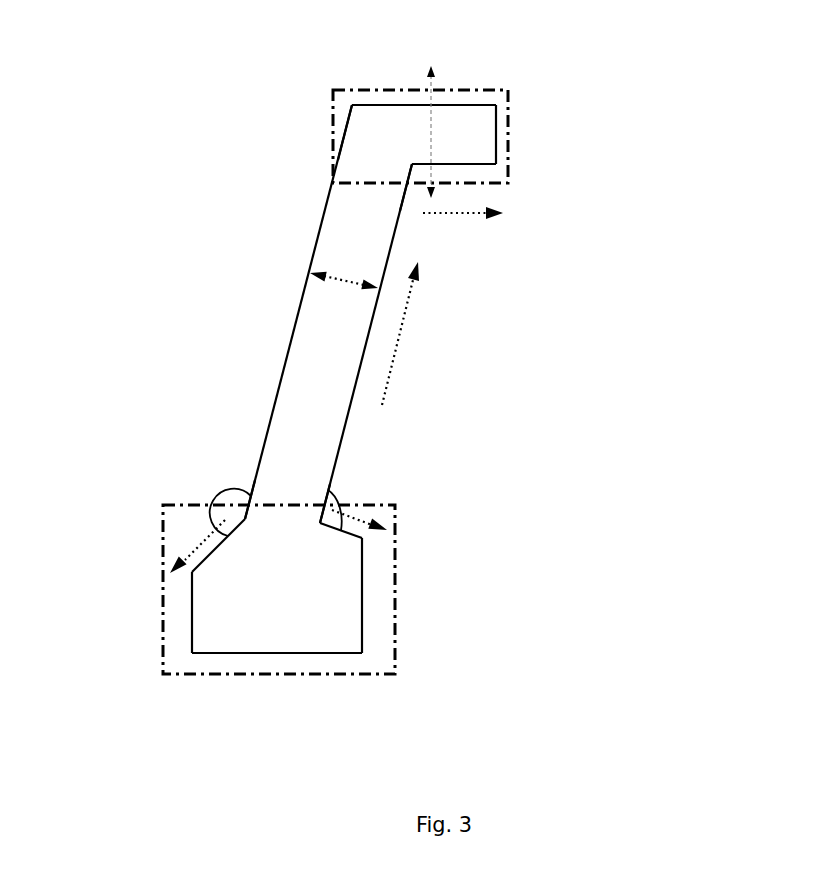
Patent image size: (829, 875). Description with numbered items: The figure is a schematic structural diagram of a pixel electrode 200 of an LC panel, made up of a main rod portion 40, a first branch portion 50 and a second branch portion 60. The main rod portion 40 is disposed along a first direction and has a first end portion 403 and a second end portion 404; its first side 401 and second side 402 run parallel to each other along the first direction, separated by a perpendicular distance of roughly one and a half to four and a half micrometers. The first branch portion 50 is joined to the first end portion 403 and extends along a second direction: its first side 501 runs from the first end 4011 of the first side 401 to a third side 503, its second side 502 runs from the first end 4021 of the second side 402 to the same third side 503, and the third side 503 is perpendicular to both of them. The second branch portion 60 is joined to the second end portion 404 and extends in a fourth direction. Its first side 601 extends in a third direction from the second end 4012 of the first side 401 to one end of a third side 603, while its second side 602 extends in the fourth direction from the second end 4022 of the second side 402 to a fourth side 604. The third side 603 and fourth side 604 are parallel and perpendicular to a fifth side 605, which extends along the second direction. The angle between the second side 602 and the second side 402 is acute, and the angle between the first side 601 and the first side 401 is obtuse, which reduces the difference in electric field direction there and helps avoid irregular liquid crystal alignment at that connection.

The pixel electrode 200 is at (738, 60).
The first branch portion 50 is at (510, 145).
The first side of first branch portion 501 is at (450, 105).
The second side of first branch portion 502 is at (473, 163).
The third side of first branch portion 503 is at (497, 147).
The main rod portion 40 is at (172, 262).
The first side of main rod portion 401 is at (302, 300).
The second side of main rod portion 402 is at (358, 375).
The first end portion of main rod portion 403 is at (200, 75).
The first end of second side of main rod portion 4021 is at (412, 164).
The first end of first side of main rod portion 4011 is at (338, 160).
The second end portion of main rod portion 404 is at (160, 422).
The second end of second side of main rod portion 4022 is at (317, 515).
The second end of first side of main rod portion 4012 is at (244, 514).
The second branch portion 60 is at (397, 595).
The first side of second branch portion 601 is at (204, 560).
The second side of second branch portion 602 is at (349, 533).
The third side of second branch portion 603 is at (192, 627).
The fourth side of second branch portion 604 is at (363, 612).
The fifth side of second branch portion 605 is at (248, 654).